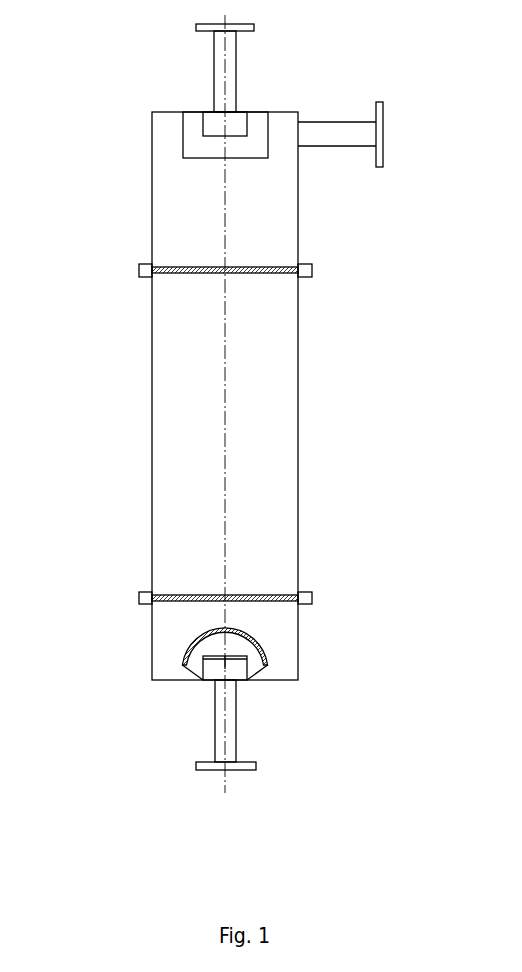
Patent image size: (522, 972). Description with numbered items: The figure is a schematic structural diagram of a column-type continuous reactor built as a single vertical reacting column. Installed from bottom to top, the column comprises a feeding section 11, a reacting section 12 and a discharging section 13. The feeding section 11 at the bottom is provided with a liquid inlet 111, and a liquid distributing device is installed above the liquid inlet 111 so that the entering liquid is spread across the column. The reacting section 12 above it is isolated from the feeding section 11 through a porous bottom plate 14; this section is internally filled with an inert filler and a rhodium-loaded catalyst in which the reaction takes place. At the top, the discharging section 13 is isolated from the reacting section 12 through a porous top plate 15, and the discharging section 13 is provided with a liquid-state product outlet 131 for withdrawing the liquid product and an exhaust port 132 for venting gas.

The feeding section 11 is at (195, 628).
The liquid inlet 111 is at (220, 752).
The reacting section 12 is at (152, 459).
The discharging section 13 is at (210, 200).
The liquid-state product outlet 131 is at (377, 133).
The exhaust port 132 is at (220, 63).
The porous bottom plate 14 is at (185, 595).
The porous top plate 15 is at (143, 272).